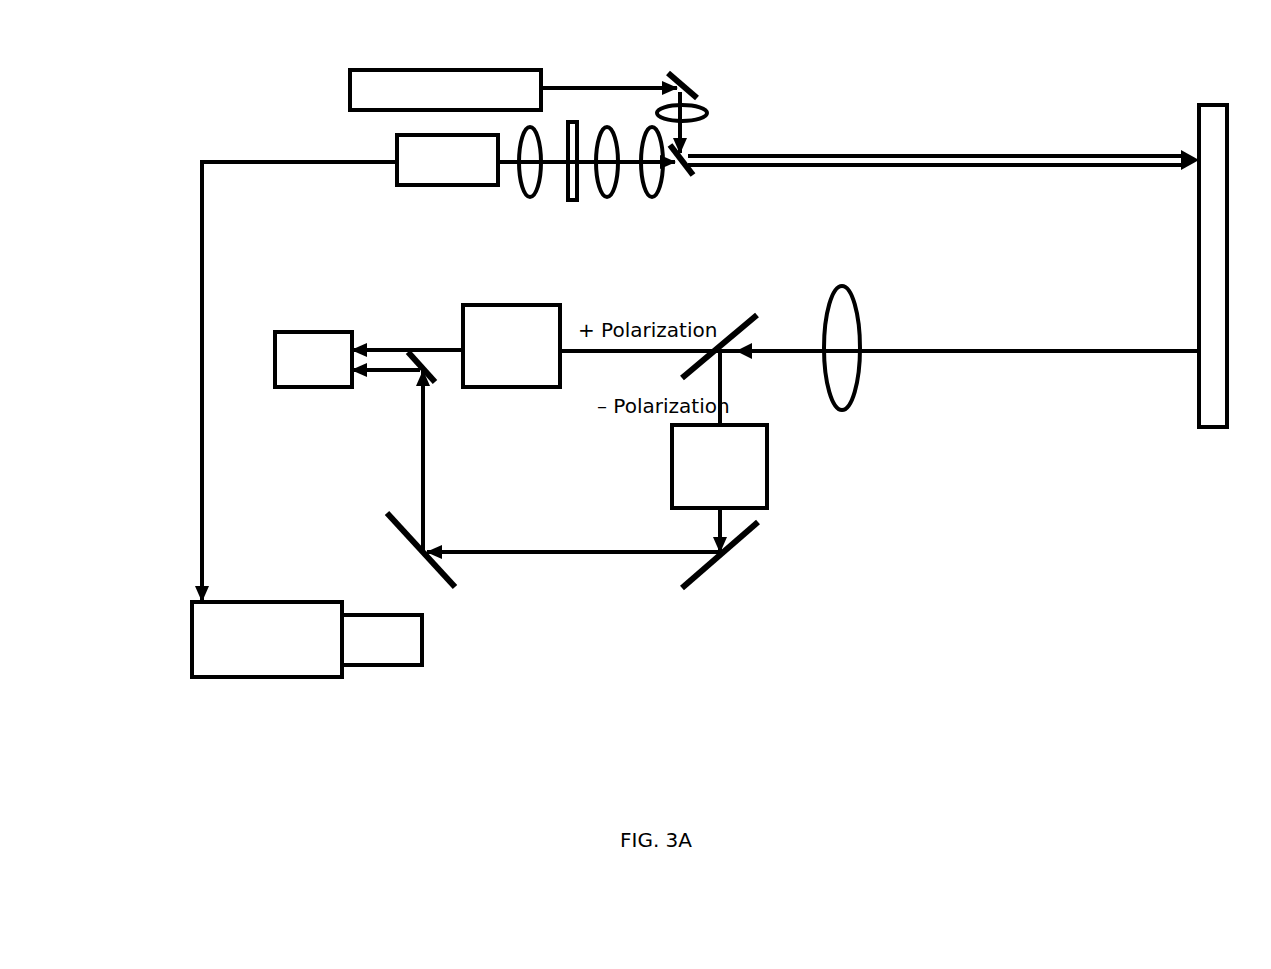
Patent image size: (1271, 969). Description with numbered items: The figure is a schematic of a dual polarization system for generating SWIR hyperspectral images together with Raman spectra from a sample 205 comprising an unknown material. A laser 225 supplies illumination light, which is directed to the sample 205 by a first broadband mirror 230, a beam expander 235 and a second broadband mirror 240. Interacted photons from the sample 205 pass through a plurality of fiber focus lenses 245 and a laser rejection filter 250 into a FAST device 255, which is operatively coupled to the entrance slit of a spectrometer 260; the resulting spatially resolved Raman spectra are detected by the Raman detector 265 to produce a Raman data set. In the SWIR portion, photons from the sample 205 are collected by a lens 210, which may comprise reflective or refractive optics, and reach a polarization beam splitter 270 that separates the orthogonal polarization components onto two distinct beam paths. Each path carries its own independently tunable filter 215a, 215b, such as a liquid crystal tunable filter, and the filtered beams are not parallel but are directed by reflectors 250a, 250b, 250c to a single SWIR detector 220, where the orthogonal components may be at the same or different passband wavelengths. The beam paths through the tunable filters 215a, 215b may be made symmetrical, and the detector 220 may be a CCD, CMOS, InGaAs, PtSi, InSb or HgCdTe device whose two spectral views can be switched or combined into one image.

The sample 205 is at (1212, 293).
The lens 210 is at (874, 368).
The tunable filter 215a is at (511, 388).
The tunable filter 215b is at (753, 483).
The SWIR detector 220 is at (324, 399).
The laser 225 is at (513, 59).
The broadband mirror 230 is at (694, 96).
The beam expander 235 is at (710, 110).
The broadband mirror 240 is at (697, 152).
The fiber focus lenses 245 is at (541, 186).
The laser rejection filter 250 is at (567, 199).
The reflector 250a is at (739, 555).
The reflector 250b is at (417, 550).
The reflector 250c is at (442, 382).
The FAST device 255 is at (358, 153).
The spectrometer 260 is at (253, 673).
The Raman detector 265 is at (387, 679).
The polarization beam splitter 270 is at (732, 313).